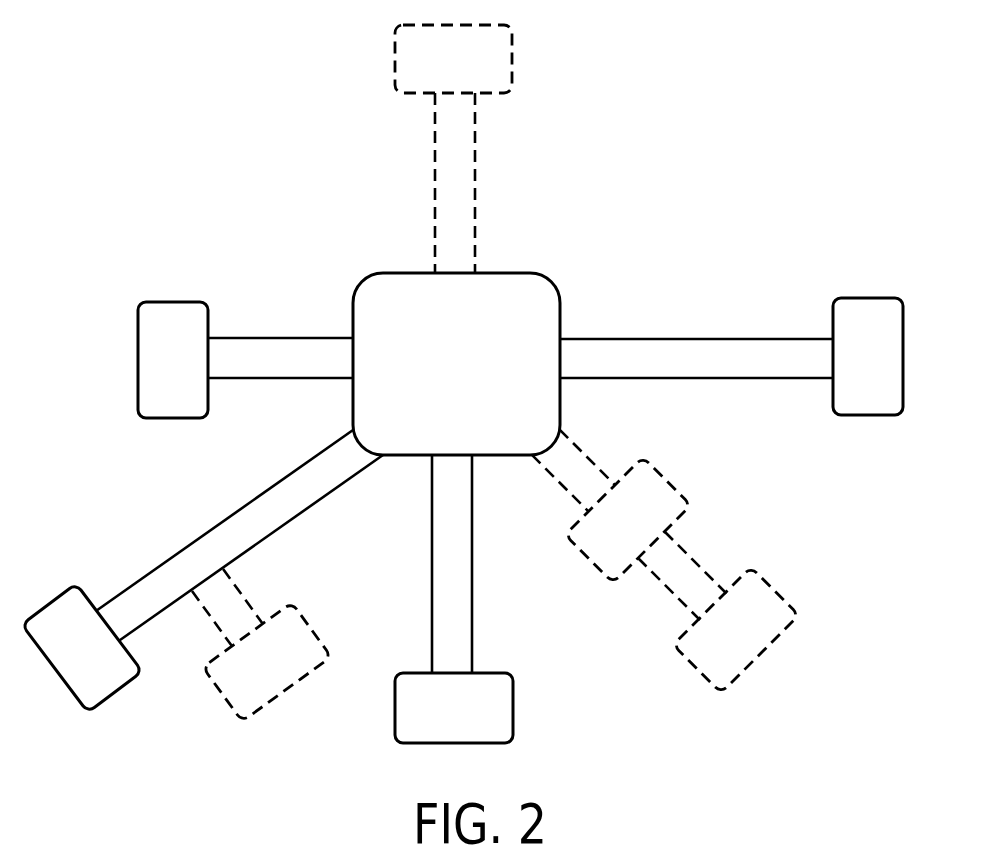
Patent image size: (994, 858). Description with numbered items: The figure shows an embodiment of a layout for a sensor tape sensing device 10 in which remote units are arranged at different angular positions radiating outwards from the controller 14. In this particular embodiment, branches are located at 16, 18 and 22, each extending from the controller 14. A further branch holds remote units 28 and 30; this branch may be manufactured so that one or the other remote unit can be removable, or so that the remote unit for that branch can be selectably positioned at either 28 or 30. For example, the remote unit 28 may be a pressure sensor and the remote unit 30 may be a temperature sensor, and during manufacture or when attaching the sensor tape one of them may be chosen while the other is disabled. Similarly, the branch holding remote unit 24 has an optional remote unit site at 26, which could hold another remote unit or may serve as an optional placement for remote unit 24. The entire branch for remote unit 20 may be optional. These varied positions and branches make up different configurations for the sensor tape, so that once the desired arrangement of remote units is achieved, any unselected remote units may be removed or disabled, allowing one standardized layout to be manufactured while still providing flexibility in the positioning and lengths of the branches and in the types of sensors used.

The vehicle system 10 is at (679, 168).
The controller 14 is at (441, 377).
The branch 16 is at (854, 378).
The branch 18 is at (161, 376).
The remote unit 20 is at (439, 76).
The branch 22 is at (440, 724).
The remote unit 24 is at (69, 667).
The optional remote unit site 26 is at (253, 679).
The remote unit 28 is at (613, 536).
The remote unit 30 is at (724, 647).